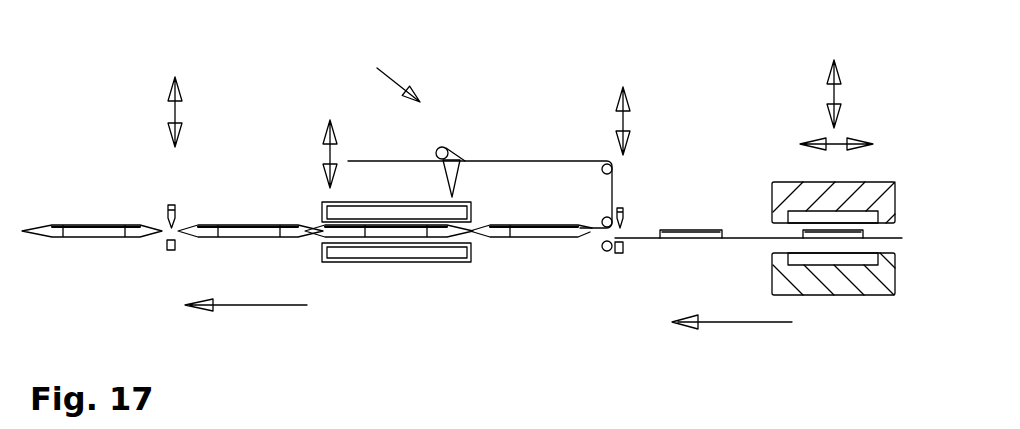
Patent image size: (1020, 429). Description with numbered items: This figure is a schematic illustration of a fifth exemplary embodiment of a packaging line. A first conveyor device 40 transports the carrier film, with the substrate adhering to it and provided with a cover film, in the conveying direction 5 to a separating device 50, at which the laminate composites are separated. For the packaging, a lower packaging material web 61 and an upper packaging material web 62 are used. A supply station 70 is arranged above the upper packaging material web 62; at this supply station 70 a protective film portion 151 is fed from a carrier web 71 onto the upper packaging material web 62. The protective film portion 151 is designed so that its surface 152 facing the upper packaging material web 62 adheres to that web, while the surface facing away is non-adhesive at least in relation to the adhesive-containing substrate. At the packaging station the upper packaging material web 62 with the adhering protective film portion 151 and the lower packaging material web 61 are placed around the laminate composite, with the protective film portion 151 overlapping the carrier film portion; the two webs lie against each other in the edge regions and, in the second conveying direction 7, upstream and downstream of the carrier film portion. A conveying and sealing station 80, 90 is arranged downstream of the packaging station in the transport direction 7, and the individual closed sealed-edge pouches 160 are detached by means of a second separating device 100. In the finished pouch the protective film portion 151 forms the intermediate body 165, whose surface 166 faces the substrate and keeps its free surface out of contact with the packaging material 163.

The sealed-edge pouch 160 is at (115, 225).
The second separating device 100 is at (171, 205).
The intermediate body 165 is at (210, 226).
The carrier web 71 is at (437, 150).
The surface of the protective film portion 152 is at (444, 160).
The supply station 70 is at (458, 146).
The upper packaging material web 62 is at (509, 124).
The protective film portion 151 is at (570, 161).
The separating device 50 is at (619, 216).
The first conveyor device 40 is at (805, 195).
The second conveying direction 7 is at (247, 304).
The conveying and sealing station 80 is at (393, 290).
The conveying and sealing station 90 is at (406, 263).
The surface of the intermediate body 166 is at (452, 237).
The lower packaging material web 61 is at (611, 251).
The conveying direction 5 is at (744, 322).
The packaging material 163 is at (707, 428).